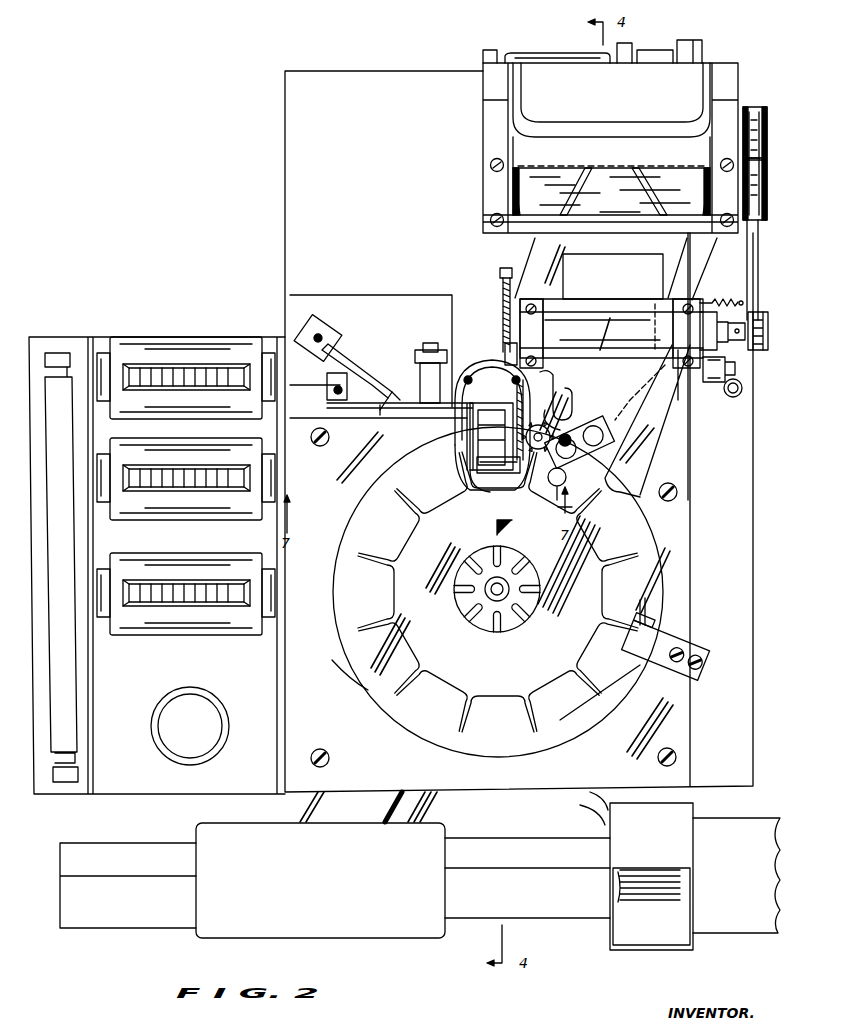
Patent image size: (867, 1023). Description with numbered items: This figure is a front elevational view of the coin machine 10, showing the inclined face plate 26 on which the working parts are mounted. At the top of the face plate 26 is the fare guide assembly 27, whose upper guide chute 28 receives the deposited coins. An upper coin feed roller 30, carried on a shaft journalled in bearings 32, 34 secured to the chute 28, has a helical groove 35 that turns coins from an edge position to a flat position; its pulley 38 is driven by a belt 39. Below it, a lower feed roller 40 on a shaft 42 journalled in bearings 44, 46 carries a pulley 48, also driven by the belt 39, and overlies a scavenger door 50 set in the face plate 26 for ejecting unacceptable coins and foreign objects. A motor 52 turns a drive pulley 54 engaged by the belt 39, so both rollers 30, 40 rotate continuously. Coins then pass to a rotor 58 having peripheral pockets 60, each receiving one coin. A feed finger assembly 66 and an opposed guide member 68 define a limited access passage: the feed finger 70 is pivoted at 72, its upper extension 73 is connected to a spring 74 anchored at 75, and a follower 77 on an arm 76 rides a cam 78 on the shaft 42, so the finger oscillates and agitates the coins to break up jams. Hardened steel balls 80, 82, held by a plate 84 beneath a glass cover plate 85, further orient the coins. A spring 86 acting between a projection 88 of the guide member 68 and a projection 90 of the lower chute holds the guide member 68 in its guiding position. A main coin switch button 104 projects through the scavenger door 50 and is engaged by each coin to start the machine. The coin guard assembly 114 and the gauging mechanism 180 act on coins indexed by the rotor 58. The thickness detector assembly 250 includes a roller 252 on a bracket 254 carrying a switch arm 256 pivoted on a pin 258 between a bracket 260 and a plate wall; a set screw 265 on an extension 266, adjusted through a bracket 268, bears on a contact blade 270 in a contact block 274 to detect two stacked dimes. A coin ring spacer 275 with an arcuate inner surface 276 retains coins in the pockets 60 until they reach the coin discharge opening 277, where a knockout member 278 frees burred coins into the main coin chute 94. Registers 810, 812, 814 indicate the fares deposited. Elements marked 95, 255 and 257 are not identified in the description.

The coin machine 10 is at (265, 83).
The face plate 26 is at (357, 80).
The fare guide assembly 27 is at (598, 172).
The upper guide chute 28 is at (522, 108).
The upper coin feed roller 30 is at (545, 178).
The bearing 32 is at (487, 200).
The bearing 34 is at (735, 205).
The spiral groove 35 is at (590, 178).
The pulley 38 is at (770, 177).
The belt 39 is at (755, 268).
The lower feed roller 40 is at (588, 318).
The shaft 42 is at (770, 335).
The bearing 44 is at (515, 316).
The bearing 46 is at (691, 282).
The pulley 48 is at (755, 350).
The scavenger door 50 is at (598, 266).
The motor 52 is at (535, 55).
The drive pulley 54 is at (760, 107).
The rotor 58 is at (498, 595).
The peripheral pockets 60 is at (478, 500).
The feed finger assembly 66 is at (684, 432).
The guide member 68 is at (565, 393).
The feed finger 70 is at (647, 421).
The pivot 72 is at (743, 392).
The upper extension 73 is at (636, 402).
The spring 74 is at (727, 300).
The spring anchor 75 is at (745, 303).
The arm 76 is at (720, 385).
The follower 77 is at (714, 385).
The cam 78 is at (708, 300).
The steel ball 80 is at (582, 442).
The steel ball 82 is at (575, 430).
The plate 84 is at (590, 430).
The cover plate 85 is at (672, 562).
The spring 86 is at (502, 297).
The projection 88 is at (505, 352).
The projection 90 is at (500, 272).
The main coin chute 94 is at (300, 806).
The rack guide 95 is at (504, 258).
The main coin switch button 104 is at (538, 512).
The coin guard assembly 114 is at (512, 402).
The gauging mechanism 180 is at (486, 405).
The thickness detector assembly 250 is at (401, 374).
The roller 252 is at (477, 466).
The bracket 254 is at (380, 297).
The arm 255 is at (312, 318).
The switch arm 256 is at (386, 453).
The pivot 257 is at (340, 402).
The pin 258 is at (435, 343).
The bracket 260 is at (420, 370).
The set screw 265 is at (335, 322).
The extension 266 is at (334, 400).
The bracket 268 is at (322, 360).
The contact blade 270 is at (342, 345).
The contact block 274 is at (360, 362).
The coin ring spacer 275 is at (300, 660).
The arcuate inner surface 276 is at (350, 668).
The coin discharge opening 277 is at (600, 730).
The knockout member 278 is at (645, 655).
The counter 810 is at (200, 352).
The counter 812 is at (208, 505).
The counter 814 is at (167, 636).